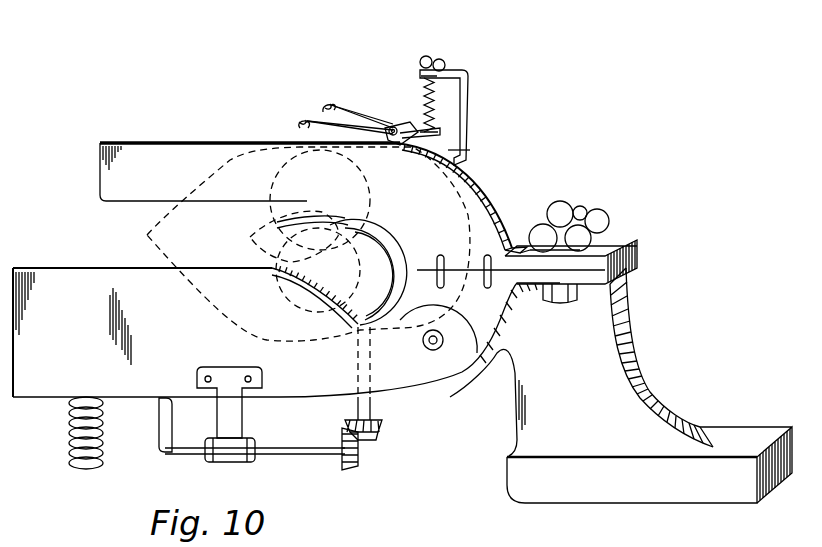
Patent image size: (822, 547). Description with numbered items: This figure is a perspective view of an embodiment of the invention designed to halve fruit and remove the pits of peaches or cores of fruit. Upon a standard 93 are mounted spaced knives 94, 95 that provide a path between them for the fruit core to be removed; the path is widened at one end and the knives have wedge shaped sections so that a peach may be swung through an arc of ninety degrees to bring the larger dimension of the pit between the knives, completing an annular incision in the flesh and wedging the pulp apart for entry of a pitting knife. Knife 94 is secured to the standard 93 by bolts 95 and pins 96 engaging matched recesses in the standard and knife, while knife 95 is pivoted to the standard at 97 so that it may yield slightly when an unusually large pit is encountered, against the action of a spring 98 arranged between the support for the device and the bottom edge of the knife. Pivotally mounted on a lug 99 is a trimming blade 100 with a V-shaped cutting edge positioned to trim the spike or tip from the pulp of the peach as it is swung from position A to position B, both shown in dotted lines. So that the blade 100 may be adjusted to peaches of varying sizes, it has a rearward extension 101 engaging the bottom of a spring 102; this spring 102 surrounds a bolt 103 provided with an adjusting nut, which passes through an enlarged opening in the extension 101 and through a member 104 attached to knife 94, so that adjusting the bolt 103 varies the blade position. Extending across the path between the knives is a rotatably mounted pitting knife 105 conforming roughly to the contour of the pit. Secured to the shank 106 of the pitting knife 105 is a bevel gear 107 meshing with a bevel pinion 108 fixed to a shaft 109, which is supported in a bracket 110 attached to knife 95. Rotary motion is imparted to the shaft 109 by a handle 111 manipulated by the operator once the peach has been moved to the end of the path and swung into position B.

The position A is at (231, 158).
The position B is at (466, 220).
The standard 93 is at (621, 385).
The knife 94 is at (250, 172).
The knife 95 is at (640, 212).
The pins 96 is at (440, 270).
The pivot 97 is at (463, 372).
The spring 98 is at (78, 470).
The lug 99 is at (397, 147).
The trimming blade 100 is at (380, 120).
The rearward extension 101 is at (441, 131).
The spring 102 is at (422, 107).
The bolt 103 is at (446, 66).
The member 104 is at (468, 107).
The pitting knife 105 is at (400, 235).
The shank 106 is at (372, 415).
The bevel gear 107 is at (378, 433).
The bevel pinion 108 is at (347, 470).
The shaft 109 is at (287, 455).
The bracket 110 is at (232, 421).
The handle 111 is at (159, 437).